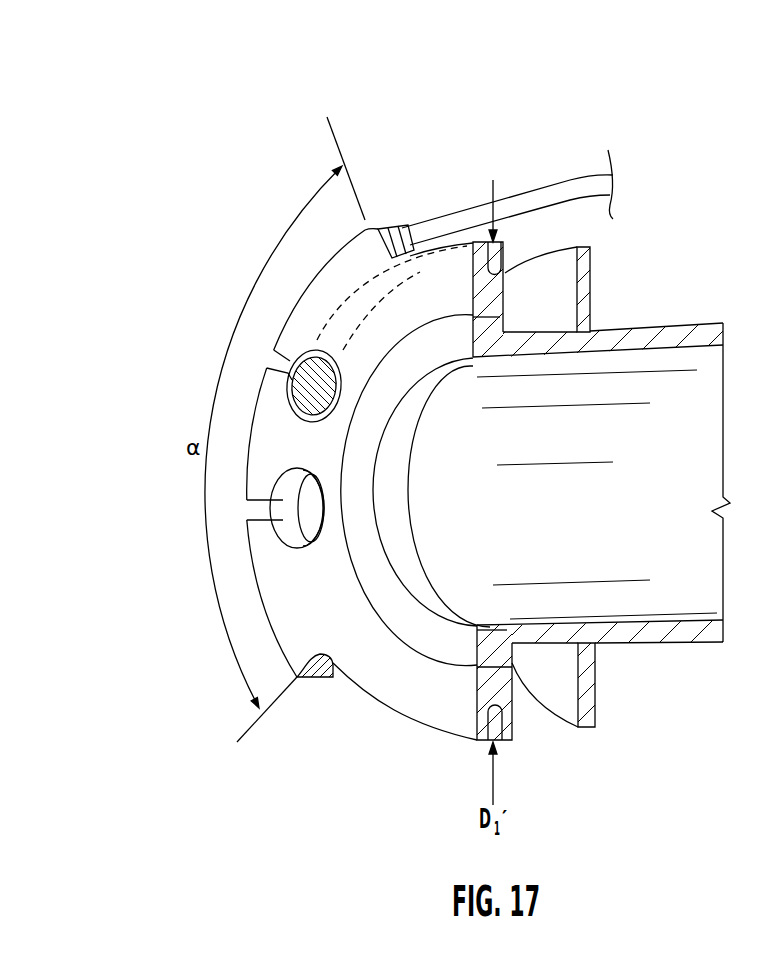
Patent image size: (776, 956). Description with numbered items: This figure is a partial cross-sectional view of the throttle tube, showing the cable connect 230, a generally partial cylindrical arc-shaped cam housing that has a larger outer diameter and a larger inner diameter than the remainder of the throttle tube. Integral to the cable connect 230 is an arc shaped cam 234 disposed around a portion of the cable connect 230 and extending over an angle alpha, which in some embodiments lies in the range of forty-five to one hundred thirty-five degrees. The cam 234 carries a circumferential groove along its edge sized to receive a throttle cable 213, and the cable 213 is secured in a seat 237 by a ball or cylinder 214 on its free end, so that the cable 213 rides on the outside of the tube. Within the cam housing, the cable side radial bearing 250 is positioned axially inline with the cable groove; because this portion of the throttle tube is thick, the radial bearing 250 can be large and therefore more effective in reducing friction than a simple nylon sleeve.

The throttle cable 213 is at (570, 196).
The cable connect 230 is at (387, 328).
The arc shaped cam 234 is at (312, 308).
The ball or cylinder 214 is at (294, 392).
The seat 237 is at (315, 423).
The cable side radial bearing 250 is at (495, 648).